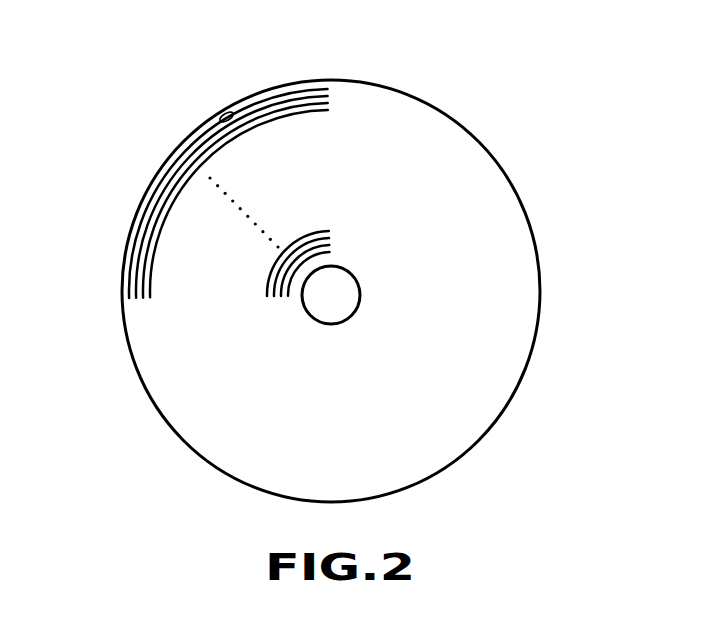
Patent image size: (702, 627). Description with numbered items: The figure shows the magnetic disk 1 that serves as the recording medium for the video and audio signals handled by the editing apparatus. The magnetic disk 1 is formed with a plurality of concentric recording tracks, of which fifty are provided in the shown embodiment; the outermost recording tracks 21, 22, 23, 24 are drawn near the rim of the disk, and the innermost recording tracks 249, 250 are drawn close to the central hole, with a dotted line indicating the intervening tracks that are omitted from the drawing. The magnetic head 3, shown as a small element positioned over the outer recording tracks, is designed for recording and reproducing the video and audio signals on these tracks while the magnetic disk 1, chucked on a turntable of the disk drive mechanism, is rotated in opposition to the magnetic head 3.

The magnetic disk 1 is at (490, 139).
The magnetic head 3 is at (217, 114).
The recording track 21 is at (164, 185).
The recording track 22 is at (154, 220).
The recording track 23 is at (150, 260).
The recording track 24 is at (153, 285).
The recording track 249 is at (281, 297).
The recording track 250 is at (288, 298).